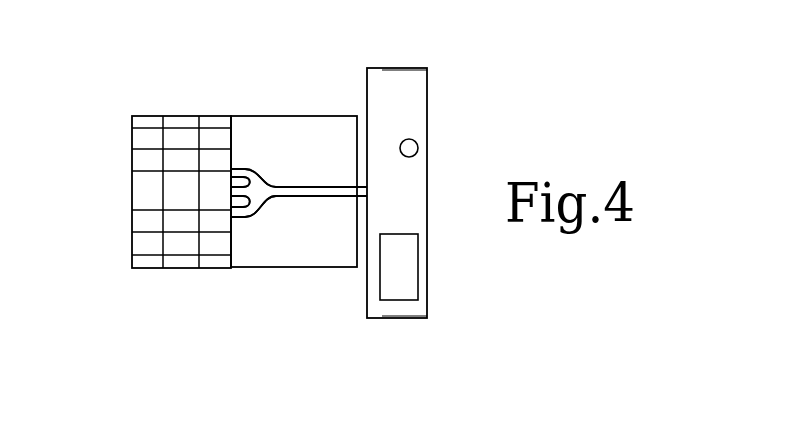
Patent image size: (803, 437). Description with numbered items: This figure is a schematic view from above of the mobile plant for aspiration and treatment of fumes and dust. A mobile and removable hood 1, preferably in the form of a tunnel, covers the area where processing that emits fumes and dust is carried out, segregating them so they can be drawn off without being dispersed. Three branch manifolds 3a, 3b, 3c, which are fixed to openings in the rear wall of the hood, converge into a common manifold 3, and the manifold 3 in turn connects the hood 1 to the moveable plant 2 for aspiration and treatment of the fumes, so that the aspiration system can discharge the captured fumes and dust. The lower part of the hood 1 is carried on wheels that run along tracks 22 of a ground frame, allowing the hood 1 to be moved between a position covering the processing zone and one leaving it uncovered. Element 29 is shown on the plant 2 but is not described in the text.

The mobile and removable hood 1 is at (146, 139).
The moveable plant for aspiration and treatment of the fumes 2 is at (383, 85).
The manifold 3 is at (305, 187).
The manifold 3a is at (250, 168).
The manifold 3b is at (262, 203).
The manifold 3c is at (236, 213).
The tracks 22 is at (323, 267).
The socket 29 is at (418, 270).